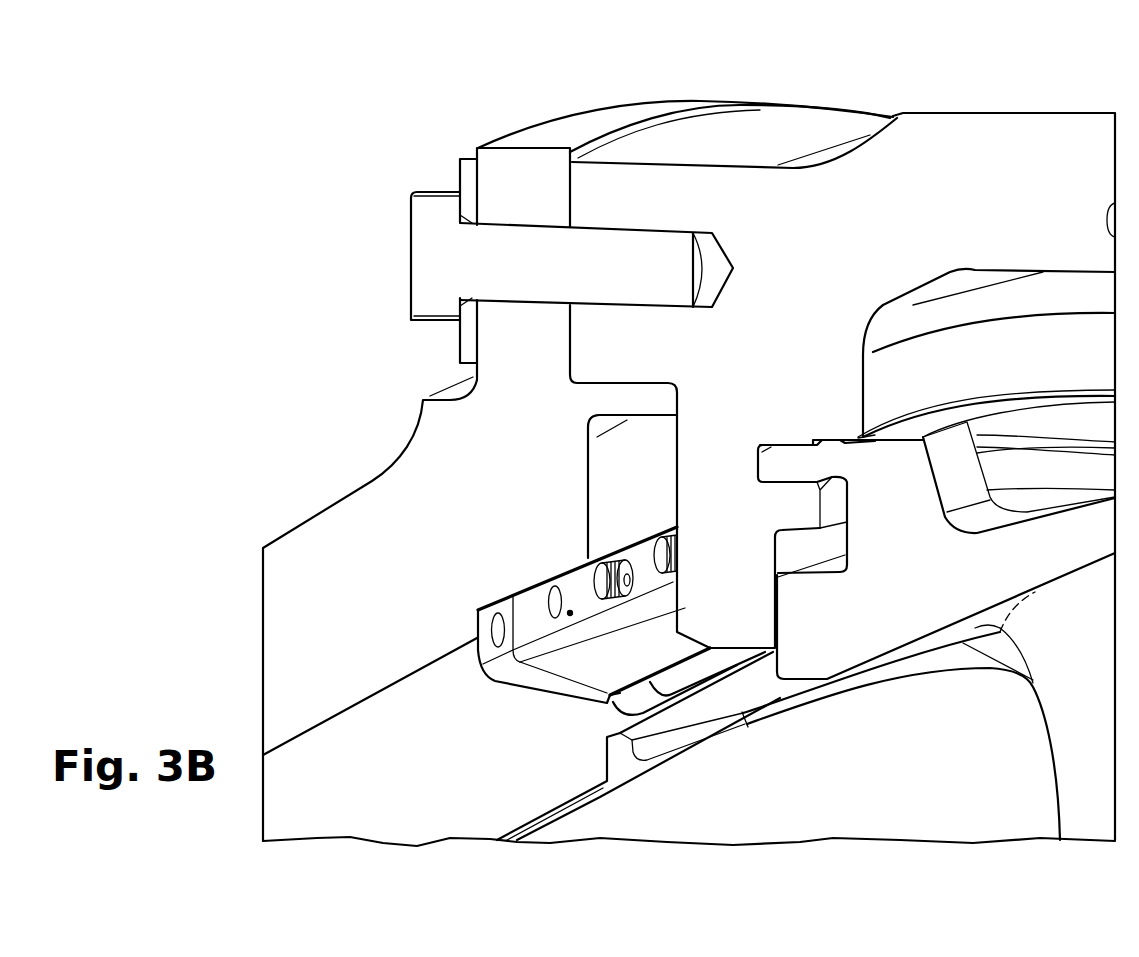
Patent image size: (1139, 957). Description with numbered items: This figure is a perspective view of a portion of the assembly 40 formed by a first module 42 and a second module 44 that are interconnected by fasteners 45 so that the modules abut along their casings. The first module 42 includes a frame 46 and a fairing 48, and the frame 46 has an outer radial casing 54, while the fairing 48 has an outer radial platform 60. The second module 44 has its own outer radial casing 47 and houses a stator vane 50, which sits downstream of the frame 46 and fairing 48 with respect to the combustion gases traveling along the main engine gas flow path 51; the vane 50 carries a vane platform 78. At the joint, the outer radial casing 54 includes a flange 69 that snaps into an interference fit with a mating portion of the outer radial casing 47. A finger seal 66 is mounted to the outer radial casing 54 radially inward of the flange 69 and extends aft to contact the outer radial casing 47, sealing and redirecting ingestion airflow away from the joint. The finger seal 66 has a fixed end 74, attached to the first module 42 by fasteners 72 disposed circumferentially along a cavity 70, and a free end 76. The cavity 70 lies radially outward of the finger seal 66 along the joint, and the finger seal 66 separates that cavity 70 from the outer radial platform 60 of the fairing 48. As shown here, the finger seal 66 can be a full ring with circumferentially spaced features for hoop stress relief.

The assembly 40 is at (353, 116).
The first module 42 is at (279, 334).
The second module 44 is at (889, 105).
The fasteners 45 is at (428, 256).
The frame 46 is at (249, 448).
The outer radial casing 47 is at (748, 375).
The fairing 48 is at (611, 810).
The stator vane 50 is at (1056, 657).
The main engine gas flow path 51 is at (831, 782).
The outer radial casing 54 is at (326, 607).
The outer radial platform 60 is at (551, 817).
The finger seal 66 is at (567, 573).
The flange 69 is at (627, 397).
The cavity 70 is at (596, 492).
The fasteners 72 is at (621, 562).
The fixed end 74 is at (538, 595).
The free end 76 is at (594, 668).
The vane platform 78 is at (896, 572).